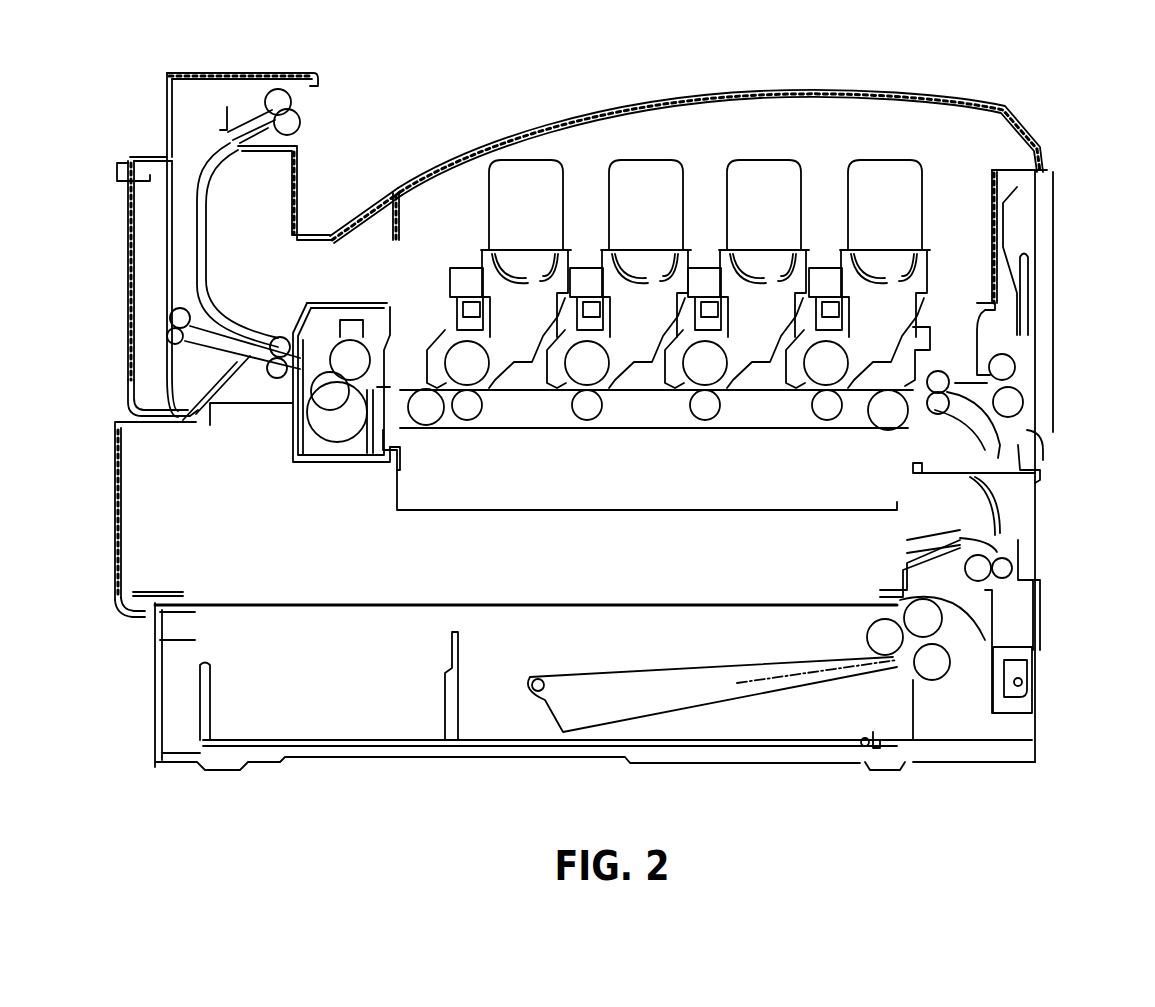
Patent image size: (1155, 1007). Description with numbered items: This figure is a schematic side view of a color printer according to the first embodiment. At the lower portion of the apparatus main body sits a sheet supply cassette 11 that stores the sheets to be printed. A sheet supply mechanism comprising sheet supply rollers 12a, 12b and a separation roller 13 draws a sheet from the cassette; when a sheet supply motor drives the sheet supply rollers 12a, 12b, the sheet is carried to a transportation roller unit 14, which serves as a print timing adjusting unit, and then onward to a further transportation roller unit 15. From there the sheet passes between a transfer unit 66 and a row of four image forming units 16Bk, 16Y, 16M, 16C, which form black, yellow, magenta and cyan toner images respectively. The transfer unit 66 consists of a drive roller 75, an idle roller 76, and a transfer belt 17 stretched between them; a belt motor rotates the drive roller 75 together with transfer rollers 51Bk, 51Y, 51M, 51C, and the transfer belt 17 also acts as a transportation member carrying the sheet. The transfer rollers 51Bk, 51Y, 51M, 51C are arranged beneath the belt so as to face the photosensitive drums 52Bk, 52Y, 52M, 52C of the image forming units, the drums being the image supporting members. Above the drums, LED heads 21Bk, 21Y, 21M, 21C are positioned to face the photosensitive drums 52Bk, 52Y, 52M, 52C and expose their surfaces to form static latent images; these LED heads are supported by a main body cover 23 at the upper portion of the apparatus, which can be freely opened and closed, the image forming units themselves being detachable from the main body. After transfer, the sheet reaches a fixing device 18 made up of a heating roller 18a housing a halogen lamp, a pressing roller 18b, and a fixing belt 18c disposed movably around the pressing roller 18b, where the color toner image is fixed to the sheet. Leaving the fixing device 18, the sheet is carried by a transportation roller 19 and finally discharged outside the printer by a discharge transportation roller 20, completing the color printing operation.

The sheet supply cassette 11 is at (917, 727).
The sheet supply roller 12a is at (890, 637).
The sheet supply roller 12b is at (927, 613).
The separation roller 13 is at (940, 662).
The transportation roller unit 14 is at (997, 552).
The transportation roller unit 15 is at (1020, 432).
The image forming unit 16C is at (516, 373).
The image forming unit 16M is at (647, 396).
The image forming unit 16Y is at (765, 391).
The image forming unit 16Bk is at (889, 399).
The transfer belt 17 is at (745, 430).
The fixing device 18 is at (337, 293).
The heating roller 18a is at (360, 352).
The pressing roller 18b is at (318, 415).
The fixing belt 18c is at (343, 425).
The transportation roller 19 is at (245, 372).
The discharge transportation roller 20 is at (298, 107).
The LED head 21C is at (485, 306).
The LED head 21M is at (630, 248).
The LED head 21Y is at (748, 248).
The LED head 21Bk is at (869, 248).
The main body cover 23 is at (762, 93).
The transfer roller 51C is at (467, 420).
The transfer roller 51M is at (587, 420).
The transfer roller 51Y is at (705, 420).
The transfer roller 51Bk is at (827, 420).
The photosensitive drum 52C is at (451, 373).
The photosensitive drum 52M is at (578, 359).
The photosensitive drum 52Y is at (696, 359).
The photosensitive drum 52Bk is at (817, 359).
The transfer unit 66 is at (676, 440).
The drive roller 75 is at (426, 428).
The idle roller 76 is at (895, 414).